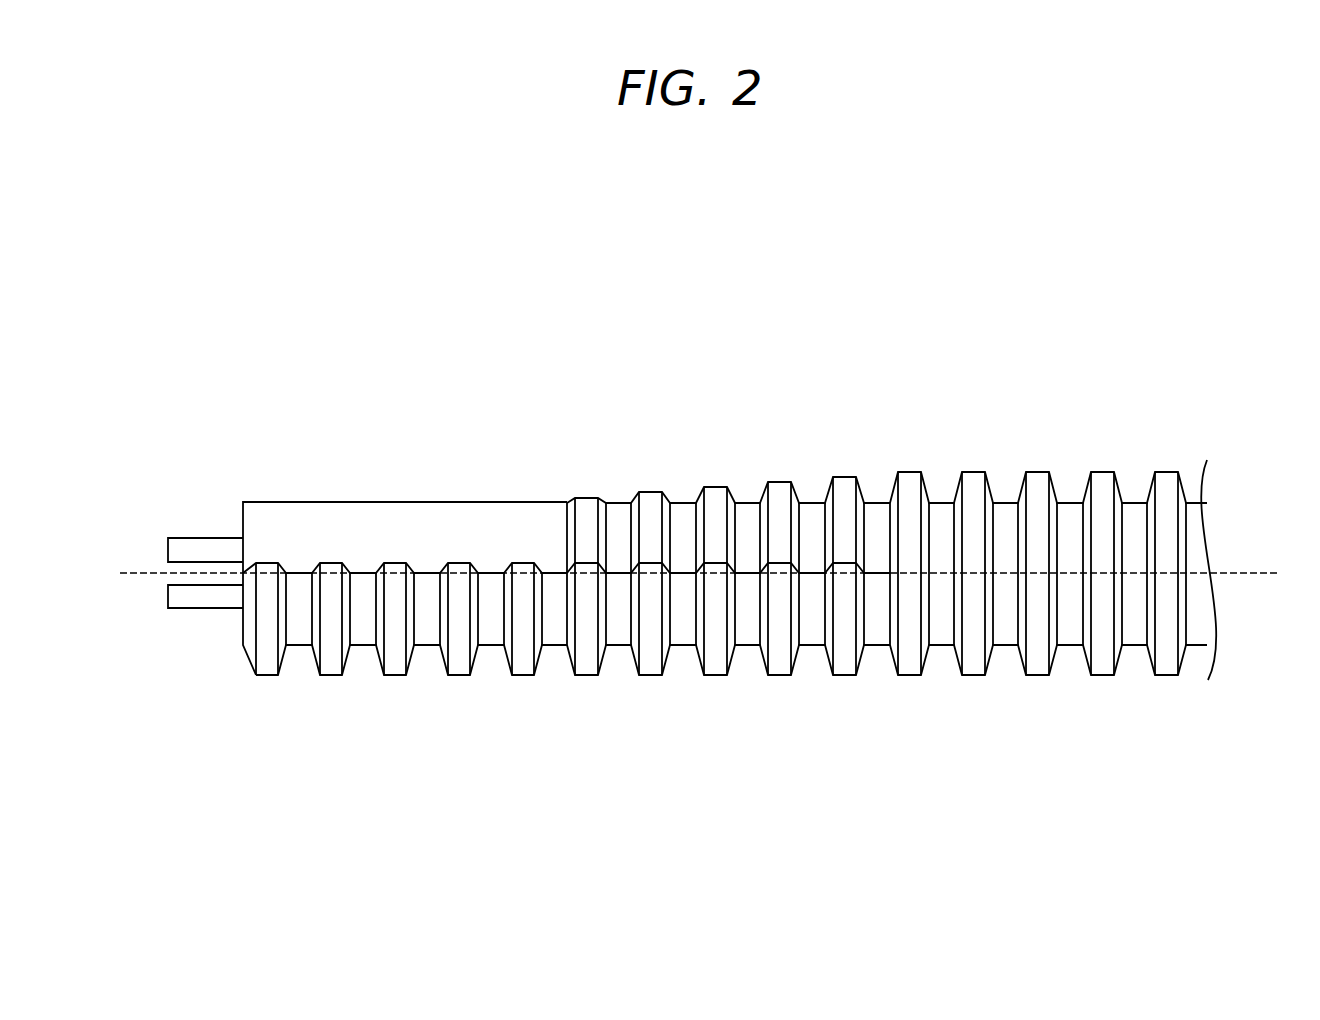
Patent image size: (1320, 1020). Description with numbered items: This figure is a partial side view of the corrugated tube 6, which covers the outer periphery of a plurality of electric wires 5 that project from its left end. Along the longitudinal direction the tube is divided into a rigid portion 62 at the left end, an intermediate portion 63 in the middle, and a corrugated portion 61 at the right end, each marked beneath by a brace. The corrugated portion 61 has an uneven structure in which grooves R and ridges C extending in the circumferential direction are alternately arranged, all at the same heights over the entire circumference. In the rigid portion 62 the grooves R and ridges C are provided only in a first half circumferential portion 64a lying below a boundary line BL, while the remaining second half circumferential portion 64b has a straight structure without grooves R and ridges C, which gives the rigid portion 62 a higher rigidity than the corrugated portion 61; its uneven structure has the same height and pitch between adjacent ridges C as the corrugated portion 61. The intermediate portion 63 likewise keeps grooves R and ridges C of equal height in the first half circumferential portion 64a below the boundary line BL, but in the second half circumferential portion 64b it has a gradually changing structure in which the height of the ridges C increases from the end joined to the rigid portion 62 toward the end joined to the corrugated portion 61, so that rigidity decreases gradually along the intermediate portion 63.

The corrugated tube 6 is at (1145, 370).
The electric wires 5 is at (180, 552).
The first half circumferential portion 64a is at (240, 630).
The second half circumferential portion 64b is at (243, 518).
The rigid portion 62 is at (247, 755).
The intermediate portion 63 is at (880, 755).
The corrugated portion 61 is at (1207, 755).
The boundary line BL is at (1247, 572).
The ridges C is at (265, 677).
The grooves R is at (293, 647).